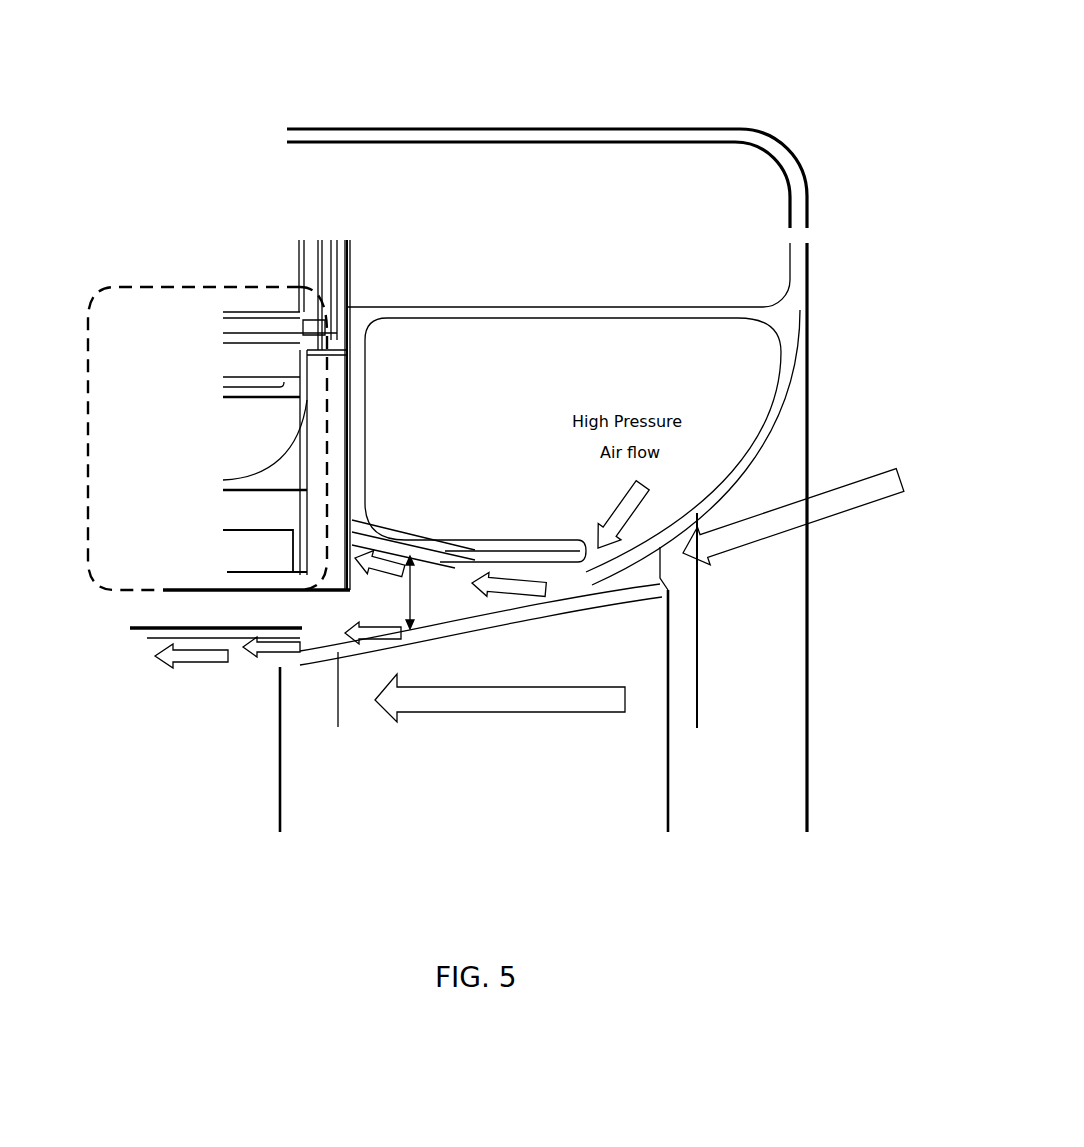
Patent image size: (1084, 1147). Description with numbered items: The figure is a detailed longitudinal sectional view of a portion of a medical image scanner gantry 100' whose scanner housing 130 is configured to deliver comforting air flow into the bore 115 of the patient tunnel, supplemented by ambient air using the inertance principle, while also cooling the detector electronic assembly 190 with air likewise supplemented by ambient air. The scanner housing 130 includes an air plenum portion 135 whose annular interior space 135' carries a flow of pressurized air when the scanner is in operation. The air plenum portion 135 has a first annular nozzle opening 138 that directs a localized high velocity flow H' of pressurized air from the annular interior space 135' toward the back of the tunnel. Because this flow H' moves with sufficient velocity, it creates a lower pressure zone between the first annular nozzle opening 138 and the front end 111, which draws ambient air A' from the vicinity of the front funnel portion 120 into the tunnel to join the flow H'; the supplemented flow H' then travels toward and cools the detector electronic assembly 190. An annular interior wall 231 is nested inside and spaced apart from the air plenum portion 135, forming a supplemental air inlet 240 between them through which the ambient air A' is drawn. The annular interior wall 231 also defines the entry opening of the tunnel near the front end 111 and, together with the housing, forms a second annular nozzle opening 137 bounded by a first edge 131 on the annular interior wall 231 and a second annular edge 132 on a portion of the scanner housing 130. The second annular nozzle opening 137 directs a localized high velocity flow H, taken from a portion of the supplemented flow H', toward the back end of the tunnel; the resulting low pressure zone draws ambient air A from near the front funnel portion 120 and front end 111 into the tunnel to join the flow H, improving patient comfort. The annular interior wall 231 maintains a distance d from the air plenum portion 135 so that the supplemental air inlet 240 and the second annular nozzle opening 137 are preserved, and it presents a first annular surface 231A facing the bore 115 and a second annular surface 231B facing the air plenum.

The medical image scanner gantry 100' is at (322, 44).
The scanner housing 130 is at (693, 128).
The front end 111 is at (815, 658).
The air plenum portion 135 is at (573, 399).
The annular interior space 135' is at (483, 299).
The detector electronic assembly 190 is at (243, 285).
The second annular edge 132 is at (280, 627).
The second annular nozzle opening 137 is at (275, 672).
The bore 115 is at (202, 818).
The first edge 131 is at (307, 660).
The second annular surface 231B is at (415, 540).
The first annular nozzle opening 138 is at (566, 572).
The front funnel portion 120 is at (797, 481).
The supplemental air inlet 240 is at (680, 573).
The annular interior wall 231 is at (622, 658).
The first annular surface 231A is at (467, 674).
The ambient air A is at (500, 731).
The ambient air A' is at (852, 548).
The high velocity flow H is at (227, 691).
The high velocity flow of pressurized air H' is at (446, 559).
The distance d is at (403, 592).